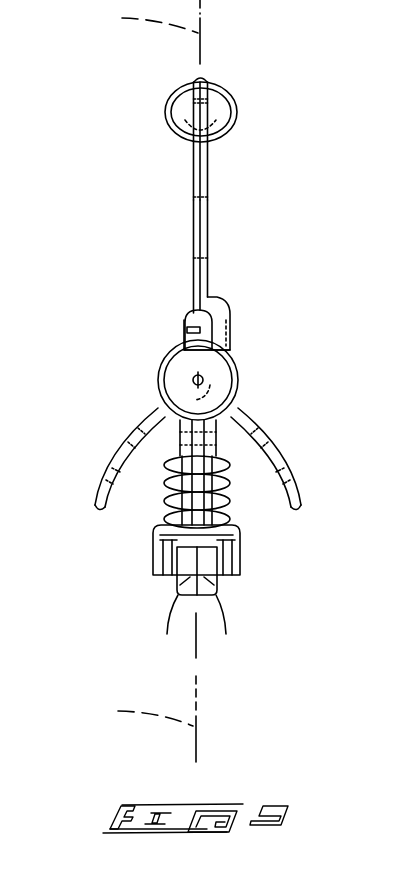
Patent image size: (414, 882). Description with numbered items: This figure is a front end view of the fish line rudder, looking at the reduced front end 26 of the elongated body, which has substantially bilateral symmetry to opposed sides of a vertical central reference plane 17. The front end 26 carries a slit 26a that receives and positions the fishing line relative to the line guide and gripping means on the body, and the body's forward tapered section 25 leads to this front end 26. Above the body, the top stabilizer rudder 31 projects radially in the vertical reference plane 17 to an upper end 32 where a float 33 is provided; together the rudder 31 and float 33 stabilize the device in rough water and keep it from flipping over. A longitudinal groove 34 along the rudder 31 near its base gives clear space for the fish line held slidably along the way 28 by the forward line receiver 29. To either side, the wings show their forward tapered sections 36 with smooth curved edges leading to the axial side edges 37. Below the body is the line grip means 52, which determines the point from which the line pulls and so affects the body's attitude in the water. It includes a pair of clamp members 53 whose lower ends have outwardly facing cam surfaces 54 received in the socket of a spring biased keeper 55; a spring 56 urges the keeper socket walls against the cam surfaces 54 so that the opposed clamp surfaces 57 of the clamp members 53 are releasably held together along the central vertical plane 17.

The vertical central reference plane 17 is at (143, 381).
The float 33 is at (218, 108).
The upper end 32 is at (193, 172).
The top stabilizer rudder 31 is at (200, 228).
The longitudinal groove 34 is at (222, 297).
The way 28 is at (183, 320).
The forward line receiver 29 is at (200, 341).
The forward tapered section 25 is at (170, 385).
The front end 26 is at (194, 378).
The slit 26a is at (205, 376).
The forward tapered sections 36 is at (120, 443).
The axial side edges 37 is at (95, 510).
The spring 56 is at (160, 465).
The spring biased keeper 55 is at (223, 528).
The line grip means 52 is at (142, 563).
The clamp surfaces 57 is at (217, 557).
The cam surfaces 54 is at (178, 575).
The clamp members 53 is at (192, 631).